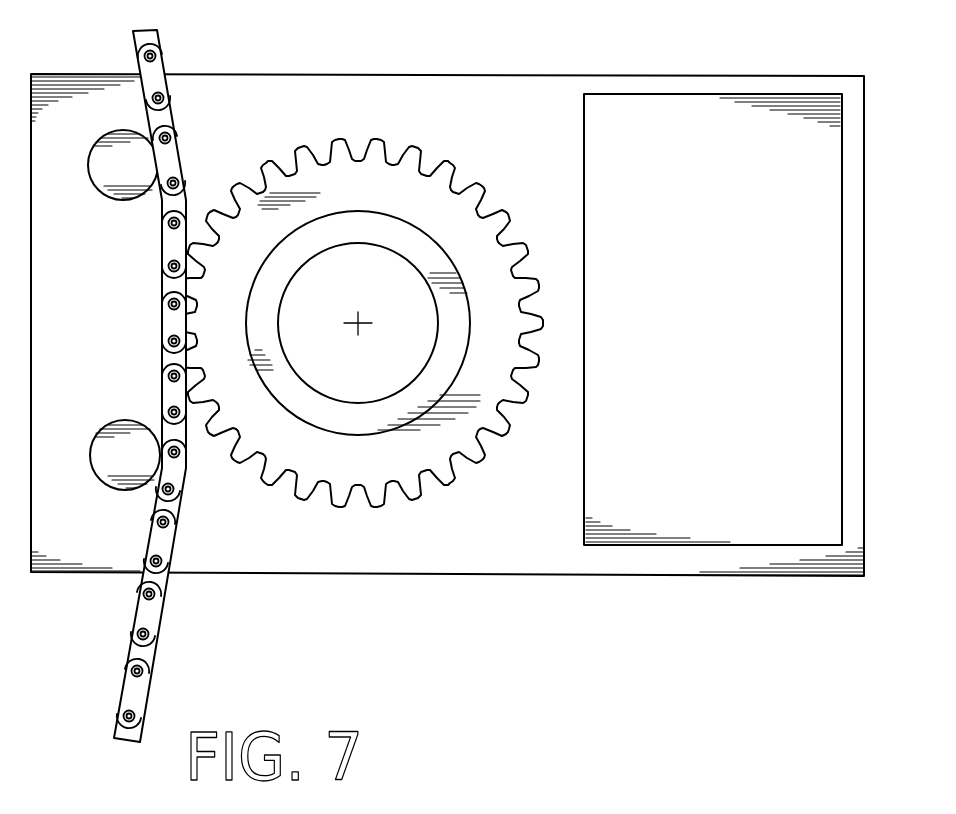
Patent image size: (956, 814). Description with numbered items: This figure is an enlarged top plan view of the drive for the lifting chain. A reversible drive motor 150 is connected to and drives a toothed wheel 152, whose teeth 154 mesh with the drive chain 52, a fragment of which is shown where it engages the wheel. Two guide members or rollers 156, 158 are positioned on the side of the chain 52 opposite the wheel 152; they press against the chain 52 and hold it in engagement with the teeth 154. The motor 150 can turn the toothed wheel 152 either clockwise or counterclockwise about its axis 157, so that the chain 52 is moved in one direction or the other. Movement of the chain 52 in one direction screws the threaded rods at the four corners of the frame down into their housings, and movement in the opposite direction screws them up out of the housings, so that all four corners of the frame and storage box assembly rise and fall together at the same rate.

The drive chain 52 is at (158, 72).
The drive motor 150 is at (452, 553).
The toothed wheel 152 is at (438, 210).
The teeth 154 is at (540, 290).
The guide roller 156 is at (110, 173).
The gear axis center 157 is at (361, 328).
The guide roller 158 is at (122, 443).